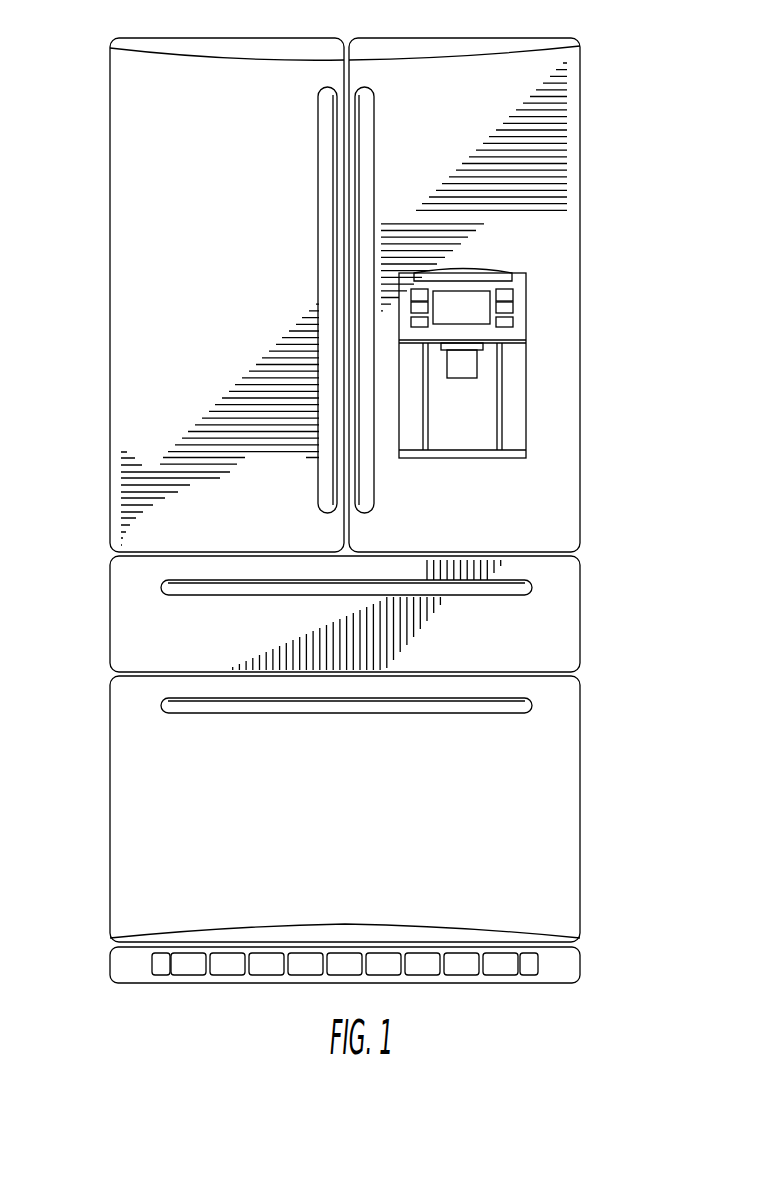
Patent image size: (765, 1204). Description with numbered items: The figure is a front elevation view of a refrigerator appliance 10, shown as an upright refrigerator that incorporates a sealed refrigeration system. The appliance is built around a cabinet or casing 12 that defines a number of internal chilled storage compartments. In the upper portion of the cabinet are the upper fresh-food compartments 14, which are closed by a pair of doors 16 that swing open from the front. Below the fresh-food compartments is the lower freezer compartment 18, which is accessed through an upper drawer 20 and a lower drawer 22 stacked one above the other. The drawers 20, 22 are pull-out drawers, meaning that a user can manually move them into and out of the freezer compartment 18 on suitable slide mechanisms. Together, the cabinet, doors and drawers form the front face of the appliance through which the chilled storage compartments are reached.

The refrigerator appliance 10 is at (618, 153).
The cabinet or casing 12 is at (580, 400).
The upper fresh-food compartments 14 is at (174, 247).
The doors 16 is at (196, 370).
The lower freezer compartment 18 is at (530, 617).
The upper drawer 20 is at (180, 646).
The lower drawer 22 is at (359, 824).